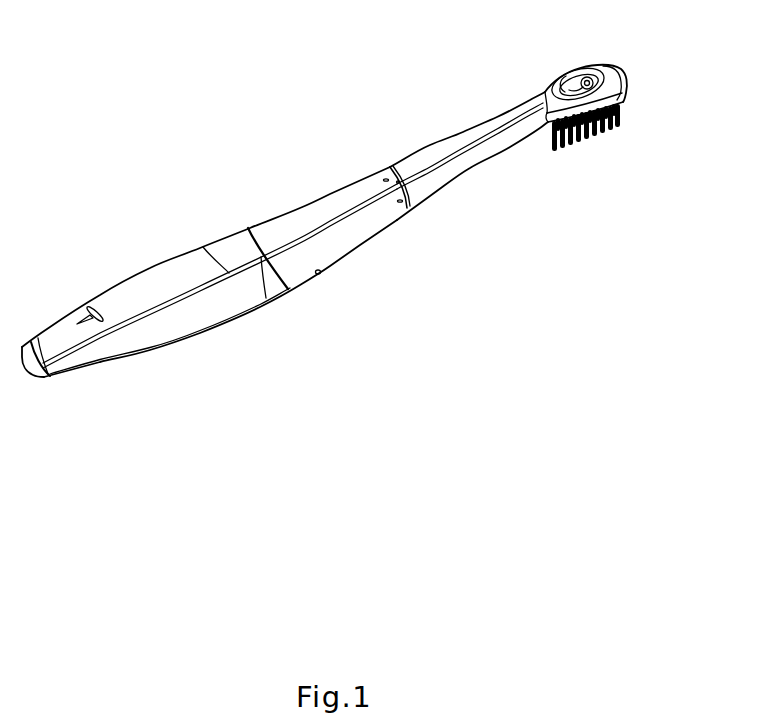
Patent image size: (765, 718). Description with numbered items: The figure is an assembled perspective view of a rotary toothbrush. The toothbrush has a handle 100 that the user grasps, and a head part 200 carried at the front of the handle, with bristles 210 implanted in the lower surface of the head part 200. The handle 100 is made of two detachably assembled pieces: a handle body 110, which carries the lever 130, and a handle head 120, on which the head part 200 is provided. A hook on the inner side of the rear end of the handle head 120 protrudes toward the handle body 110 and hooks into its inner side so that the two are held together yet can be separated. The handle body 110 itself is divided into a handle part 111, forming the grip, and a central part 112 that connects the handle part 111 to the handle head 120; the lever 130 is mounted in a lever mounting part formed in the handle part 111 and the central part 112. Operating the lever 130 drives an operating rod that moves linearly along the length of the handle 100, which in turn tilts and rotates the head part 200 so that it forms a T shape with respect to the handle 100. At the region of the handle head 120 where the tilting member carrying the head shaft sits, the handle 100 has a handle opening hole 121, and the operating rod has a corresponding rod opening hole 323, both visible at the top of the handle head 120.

The handle 100 is at (370, 72).
The handle body 110 is at (288, 110).
The handle part 111 is at (227, 247).
The central part 112 is at (312, 210).
The handle head 120 is at (436, 148).
The handle opening hole 121 is at (568, 74).
The lever 130 is at (319, 275).
The head part 200 is at (624, 99).
The bristles 210 is at (601, 145).
The rod opening hole 323 is at (576, 71).